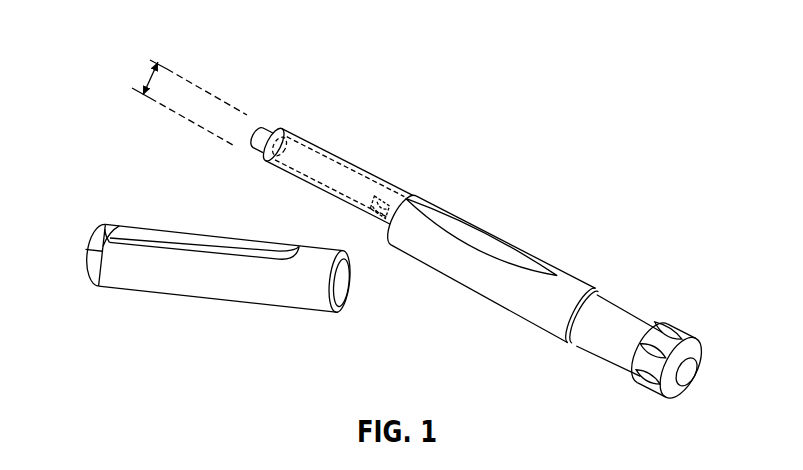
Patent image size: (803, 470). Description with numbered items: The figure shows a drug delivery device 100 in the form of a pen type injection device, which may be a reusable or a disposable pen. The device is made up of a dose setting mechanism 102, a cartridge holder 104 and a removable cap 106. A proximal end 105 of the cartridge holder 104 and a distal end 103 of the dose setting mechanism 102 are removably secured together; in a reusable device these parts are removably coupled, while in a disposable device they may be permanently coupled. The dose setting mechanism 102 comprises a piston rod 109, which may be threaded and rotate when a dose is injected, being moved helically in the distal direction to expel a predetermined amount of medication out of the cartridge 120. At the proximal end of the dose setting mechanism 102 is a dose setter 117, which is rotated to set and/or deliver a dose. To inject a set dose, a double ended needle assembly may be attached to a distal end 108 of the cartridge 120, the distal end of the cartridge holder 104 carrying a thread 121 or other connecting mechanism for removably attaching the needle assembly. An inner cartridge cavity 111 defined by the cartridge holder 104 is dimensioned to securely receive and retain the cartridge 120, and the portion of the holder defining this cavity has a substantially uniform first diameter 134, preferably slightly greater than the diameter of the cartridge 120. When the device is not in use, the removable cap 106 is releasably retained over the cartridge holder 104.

The drug delivery device 100 is at (567, 52).
The dose setting mechanism 102 is at (578, 237).
The distal end of the dose setting mechanism 103 is at (397, 250).
The cartridge holder 104 is at (383, 130).
The proximal end of the cartridge holder 105 is at (411, 196).
The removable cap 106 is at (112, 207).
The distal end of the cartridge 108 is at (271, 129).
The piston rod 109 is at (380, 184).
The inner cartridge cavity 111 is at (299, 168).
The dose setter 117 is at (643, 304).
The cartridge 120 is at (340, 186).
The thread 121 is at (284, 136).
The diameter D1 134 is at (151, 79).